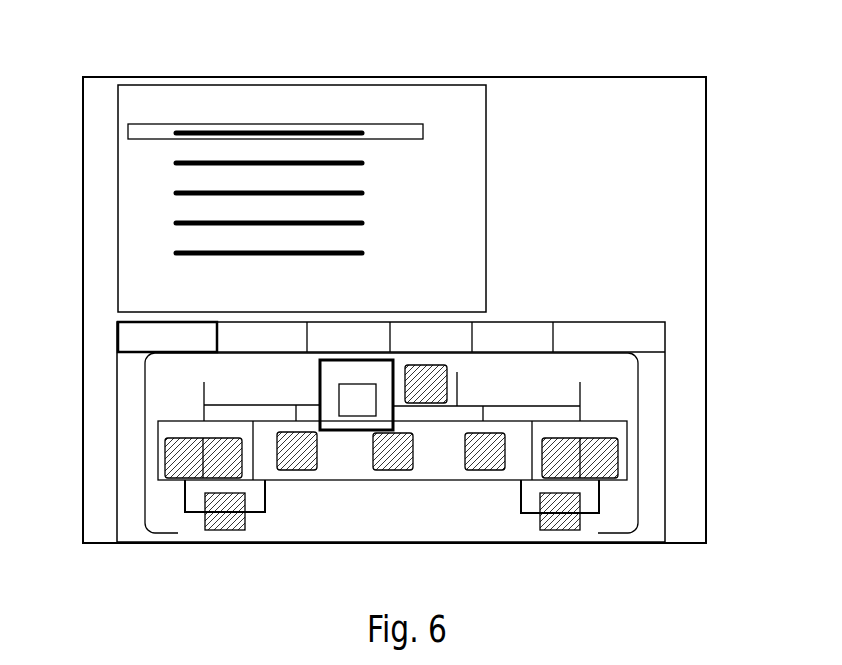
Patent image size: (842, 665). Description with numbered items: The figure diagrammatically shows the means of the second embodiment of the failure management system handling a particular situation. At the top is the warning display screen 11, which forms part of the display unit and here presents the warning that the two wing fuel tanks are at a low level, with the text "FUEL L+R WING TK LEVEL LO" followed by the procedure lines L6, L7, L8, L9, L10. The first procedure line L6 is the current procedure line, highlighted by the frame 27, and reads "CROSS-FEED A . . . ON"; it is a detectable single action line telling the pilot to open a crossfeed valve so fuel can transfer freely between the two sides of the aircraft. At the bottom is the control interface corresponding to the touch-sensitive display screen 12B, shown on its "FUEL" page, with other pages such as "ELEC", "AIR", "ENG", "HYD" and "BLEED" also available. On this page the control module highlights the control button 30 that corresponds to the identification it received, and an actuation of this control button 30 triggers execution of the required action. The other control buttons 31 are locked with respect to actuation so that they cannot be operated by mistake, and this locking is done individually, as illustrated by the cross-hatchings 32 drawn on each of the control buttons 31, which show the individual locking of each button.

The warning display screen 11 is at (203, 85).
The frame 27 is at (412, 141).
The first procedure line L6 is at (176, 136).
The procedure line L7 is at (178, 166).
The procedure line L8 is at (180, 196).
The procedure line L9 is at (179, 226).
The procedure line L10 is at (179, 257).
The touch-sensitive display screen 12B is at (448, 462).
The control button 30 is at (347, 431).
The control buttons 31 is at (297, 470).
The cross-hatchings 32 is at (200, 532).